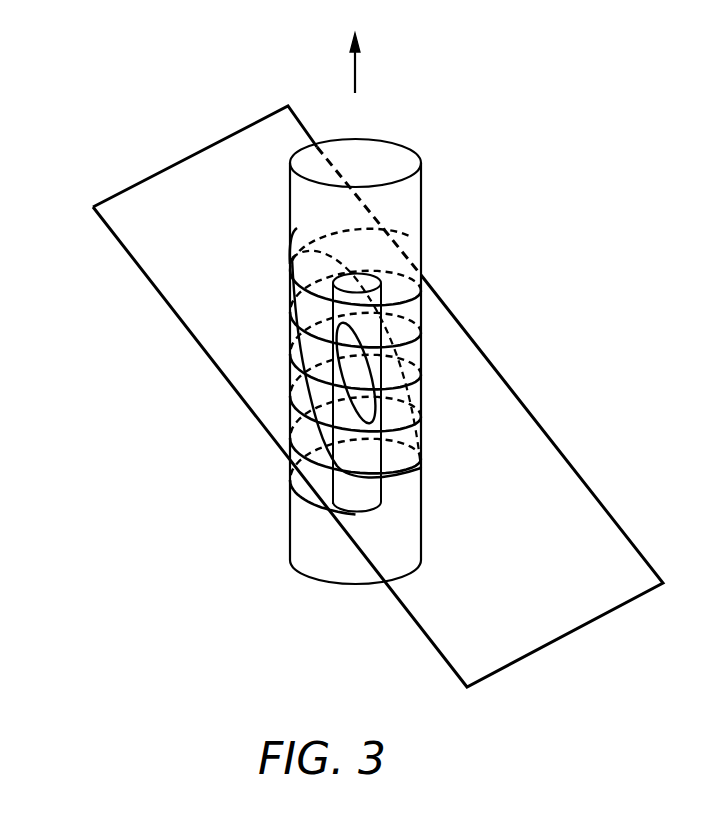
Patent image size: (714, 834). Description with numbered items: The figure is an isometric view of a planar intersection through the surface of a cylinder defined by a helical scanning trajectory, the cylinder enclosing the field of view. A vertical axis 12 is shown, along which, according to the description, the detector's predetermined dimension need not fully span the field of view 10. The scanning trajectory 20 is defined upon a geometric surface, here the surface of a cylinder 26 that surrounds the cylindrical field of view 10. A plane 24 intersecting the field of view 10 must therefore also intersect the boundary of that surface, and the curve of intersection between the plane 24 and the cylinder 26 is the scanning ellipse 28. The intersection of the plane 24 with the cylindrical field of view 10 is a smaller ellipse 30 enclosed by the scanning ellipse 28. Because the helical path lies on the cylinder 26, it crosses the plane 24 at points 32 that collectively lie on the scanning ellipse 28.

The field of view 10 is at (421, 274).
The axis 12 is at (352, 78).
The scanning trajectory 20 is at (363, 518).
The plane 24 is at (605, 537).
The cylinder 26 is at (413, 218).
The scanning ellipse 28 is at (292, 474).
The ellipse 30 is at (353, 375).
The points of intersection 32 is at (467, 528).